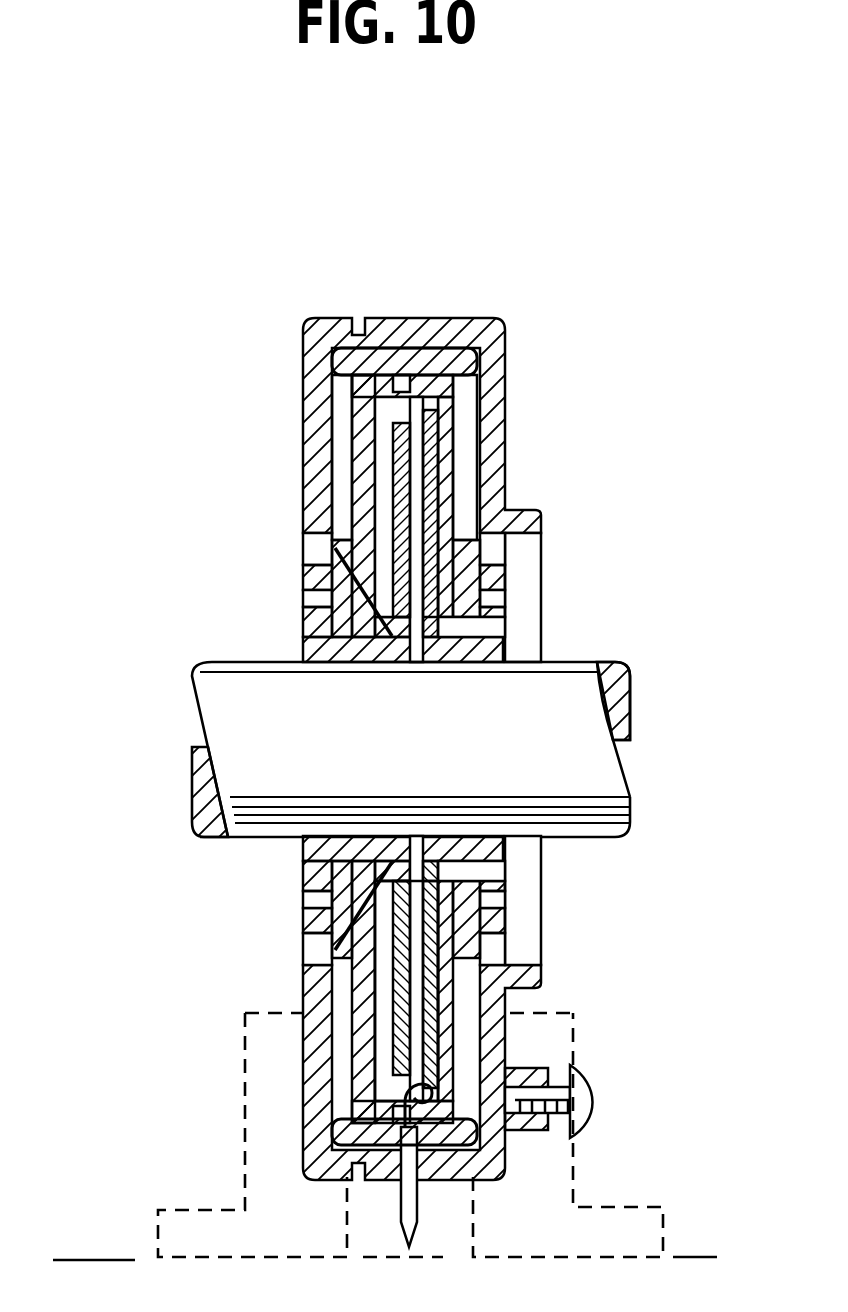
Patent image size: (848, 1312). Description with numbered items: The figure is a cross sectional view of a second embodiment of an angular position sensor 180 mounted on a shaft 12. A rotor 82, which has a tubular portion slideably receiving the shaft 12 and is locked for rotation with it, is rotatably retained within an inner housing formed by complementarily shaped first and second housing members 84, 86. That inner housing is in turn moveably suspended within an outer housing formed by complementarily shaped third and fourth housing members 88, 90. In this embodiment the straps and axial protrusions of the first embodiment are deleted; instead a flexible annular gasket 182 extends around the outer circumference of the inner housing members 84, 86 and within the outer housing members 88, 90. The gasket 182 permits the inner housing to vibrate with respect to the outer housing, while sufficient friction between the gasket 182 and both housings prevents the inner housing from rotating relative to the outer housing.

The shaft 12 is at (585, 659).
The rotor 82 is at (381, 1043).
The first housing member 84 is at (340, 386).
The second housing member 86 is at (455, 389).
The third housing member 88 is at (303, 1110).
The fourth housing member 90 is at (511, 426).
The angular position sensor 180 is at (232, 515).
The flexible annular gasket 182 is at (452, 350).